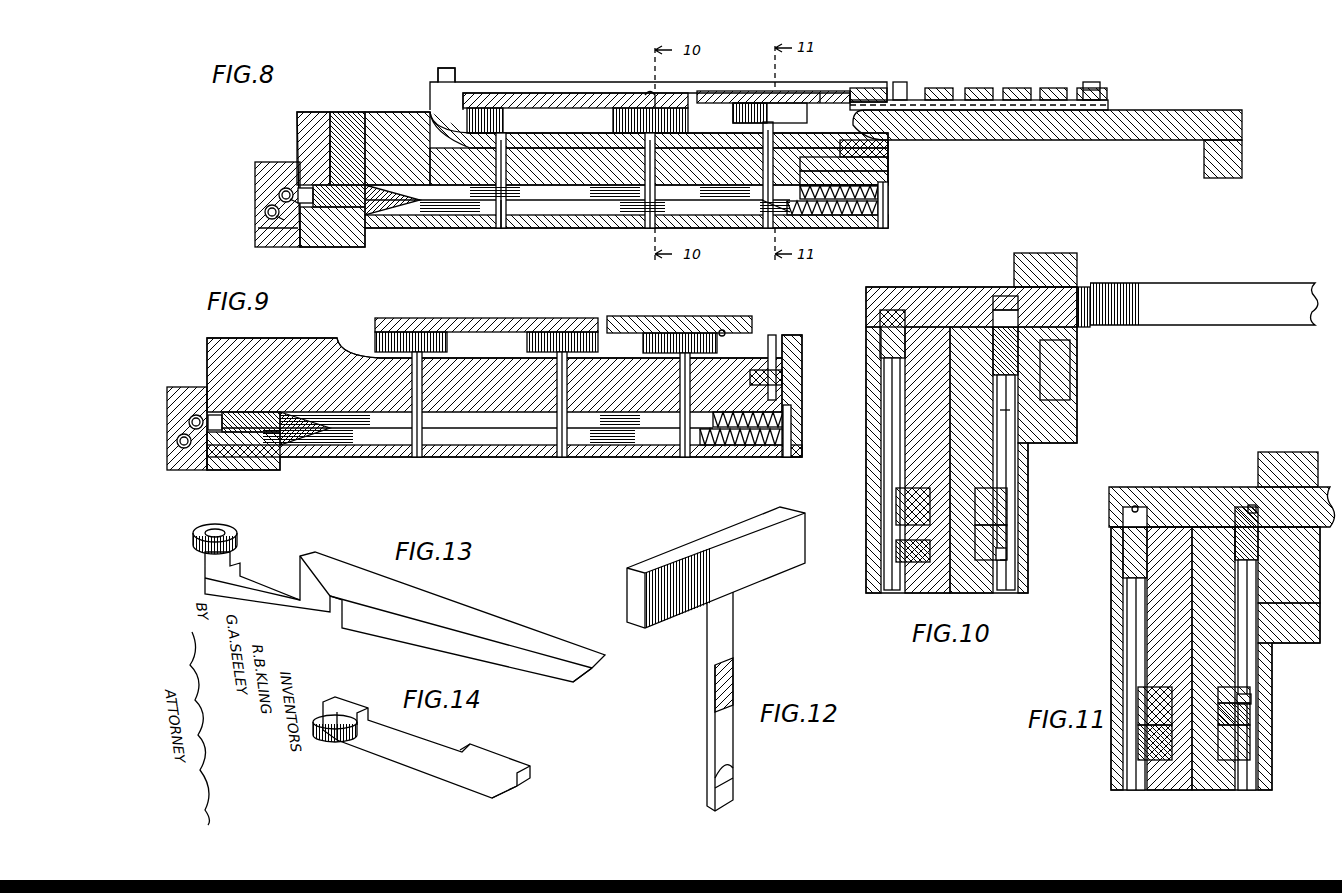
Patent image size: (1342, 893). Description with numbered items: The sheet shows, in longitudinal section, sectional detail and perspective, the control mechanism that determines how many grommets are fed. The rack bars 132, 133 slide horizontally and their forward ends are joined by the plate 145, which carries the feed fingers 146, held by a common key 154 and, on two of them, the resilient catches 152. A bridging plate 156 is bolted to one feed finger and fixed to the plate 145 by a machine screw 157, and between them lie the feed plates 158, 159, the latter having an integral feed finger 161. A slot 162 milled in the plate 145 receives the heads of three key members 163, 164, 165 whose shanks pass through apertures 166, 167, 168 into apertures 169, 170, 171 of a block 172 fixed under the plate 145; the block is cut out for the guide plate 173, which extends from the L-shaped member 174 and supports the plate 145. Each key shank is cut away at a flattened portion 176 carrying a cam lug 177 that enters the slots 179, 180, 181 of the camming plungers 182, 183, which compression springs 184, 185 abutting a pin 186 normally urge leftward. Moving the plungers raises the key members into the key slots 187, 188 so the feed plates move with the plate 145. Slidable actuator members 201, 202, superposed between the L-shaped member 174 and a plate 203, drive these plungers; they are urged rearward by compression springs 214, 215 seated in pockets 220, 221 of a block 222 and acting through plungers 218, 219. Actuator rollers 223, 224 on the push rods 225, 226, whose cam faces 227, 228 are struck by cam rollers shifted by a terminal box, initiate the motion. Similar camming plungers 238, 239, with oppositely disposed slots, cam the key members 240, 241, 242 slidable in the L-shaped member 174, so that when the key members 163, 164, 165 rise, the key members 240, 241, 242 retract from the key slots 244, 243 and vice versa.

In FIG. 8, the rack bar 132 is at (332, 160).
In FIG. 8, the rack bar 133 is at (1218, 170).
In FIG. 8, the plate 145 is at (1105, 140).
In FIG. 10, the plate 145 is at (1060, 362).
In FIG. 11, the plate 145 is at (1303, 590).
In FIG. 8, the feed fingers 146 is at (935, 88).
In FIG. 8, the resilient catches 152 is at (902, 84).
In FIG. 8, the key 154 is at (1108, 103).
In FIG. 8, the bridging plate 156 is at (803, 90).
In FIG. 10, the bridging plate 156 is at (1045, 262).
In FIG. 11, the bridging plate 156 is at (1283, 465).
In FIG. 8, the machine screw 157 is at (438, 74).
In FIG. 8, the feed plate 158 is at (735, 95).
In FIG. 9, the feed plate 158 is at (633, 322).
In FIG. 11, the feed plate 158 is at (1165, 495).
In FIG. 8, the feed plate 159 is at (572, 100).
In FIG. 9, the feed plate 159 is at (395, 320).
In FIG. 10, the feed plate 159 is at (1083, 290).
In FIG. 10, the feed finger 161 is at (1280, 295).
In FIG. 8, the slot 162 is at (875, 143).
In FIG. 10, the slot 162 is at (1012, 335).
In FIG. 11, the slot 162 is at (1237, 520).
In FIG. 8, the key member 163 is at (752, 110).
In FIG. 11, the key member 163 is at (1250, 505).
In FIG. 12, the key member 163 is at (705, 540).
In FIG. 8, the key member 164 is at (640, 120).
In FIG. 10, the key member 164 is at (995, 300).
In FIG. 8, the key member 165 is at (485, 118).
In FIG. 8, the aperture 166 is at (775, 128).
In FIG. 8, the aperture 167 is at (655, 132).
In FIG. 10, the aperture 167 is at (1012, 395).
In FIG. 8, the aperture 168 is at (500, 135).
In FIG. 8, the aperture 169 is at (765, 195).
In FIG. 8, the aperture 170 is at (625, 210).
In FIG. 10, the aperture 170 is at (1012, 415).
In FIG. 8, the aperture 171 is at (503, 200).
In FIG. 8, the block 172 is at (882, 178).
In FIG. 11, the block 172 is at (1290, 630).
In FIG. 8, the guide plate 173 is at (882, 162).
In FIG. 9, the guide plate 173 is at (800, 372).
In FIG. 8, the L-shaped member 174 is at (315, 120).
In FIG. 9, the L-shaped member 174 is at (300, 348).
In FIG. 12, the cut-away flattened portion 176 is at (733, 675).
In FIG. 10, the cam lug 177 is at (1006, 552).
In FIG. 11, the cam lug 177 is at (1250, 700).
In FIG. 12, the cam lug 177 is at (728, 780).
In FIG. 8, the slot 179 is at (768, 215).
In FIG. 11, the slot 179 is at (1250, 710).
In FIG. 8, the slot 180 is at (640, 228).
In FIG. 10, the slot 180 is at (1002, 562).
In FIG. 8, the slot 181 is at (488, 222).
In FIG. 8, the camming plunger 182 is at (705, 195).
In FIG. 10, the camming plunger 182 is at (1000, 500).
In FIG. 11, the camming plunger 182 is at (1240, 716).
In FIG. 8, the camming plunger 183 is at (568, 222).
In FIG. 10, the camming plunger 183 is at (1000, 535).
In FIG. 11, the camming plunger 183 is at (1240, 740).
In FIG. 8, the compression spring 184 is at (880, 193).
In FIG. 8, the compression spring 185 is at (880, 208).
In FIG. 8, the pin 186 is at (884, 222).
In FIG. 8, the key slot 187 is at (822, 100).
In FIG. 11, the key slot 187 is at (1252, 505).
In FIG. 8, the key slot 188 is at (652, 95).
In FIG. 10, the key slot 188 is at (1002, 312).
In FIG. 8, the actuator member 201 is at (370, 200).
In FIG. 9, the actuator member 201 is at (288, 428).
In FIG. 8, the actuator member 202 is at (343, 215).
In FIG. 9, the actuator member 202 is at (262, 440).
In FIG. 8, the plate 203 is at (318, 240).
In FIG. 9, the plate 203 is at (235, 460).
In FIG. 8, the compression spring 214 is at (282, 197).
In FIG. 9, the compression spring 214 is at (194, 414).
In FIG. 8, the compression spring 215 is at (268, 208).
In FIG. 9, the compression spring 215 is at (184, 460).
In FIG. 8, the plunger 218 is at (297, 192).
In FIG. 8, the plunger 219 is at (265, 212).
In FIG. 8, the pocket 220 is at (284, 188).
In FIG. 8, the pocket 221 is at (270, 226).
In FIG. 8, the block 222 is at (262, 242).
In FIG. 9, the block 222 is at (168, 465).
In FIG. 13, the actuator roller 223 is at (238, 530).
In FIG. 14, the actuator roller 224 is at (335, 740).
In FIG. 13, the push rod 225 is at (505, 625).
In FIG. 14, the push rod 226 is at (495, 760).
In FIG. 13, the cam face 227 is at (585, 678).
In FIG. 14, the cam face 228 is at (512, 793).
In FIG. 9, the camming plunger 238 is at (612, 440).
In FIG. 10, the camming plunger 238 is at (896, 503).
In FIG. 11, the camming plunger 238 is at (1140, 695).
In FIG. 9, the camming plunger 239 is at (475, 445).
In FIG. 10, the camming plunger 239 is at (896, 551).
In FIG. 11, the camming plunger 239 is at (1140, 750).
In FIG. 9, the key member 240 is at (668, 345).
In FIG. 11, the key member 240 is at (1130, 565).
In FIG. 9, the key member 241 is at (548, 345).
In FIG. 10, the key member 241 is at (884, 345).
In FIG. 9, the key member 242 is at (420, 345).
In FIG. 9, the key slot 243 is at (485, 325).
In FIG. 10, the key slot 243 is at (892, 312).
In FIG. 9, the key slot 244 is at (723, 330).
In FIG. 11, the key slot 244 is at (1135, 506).